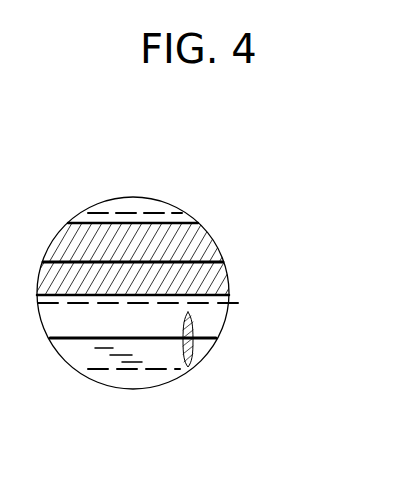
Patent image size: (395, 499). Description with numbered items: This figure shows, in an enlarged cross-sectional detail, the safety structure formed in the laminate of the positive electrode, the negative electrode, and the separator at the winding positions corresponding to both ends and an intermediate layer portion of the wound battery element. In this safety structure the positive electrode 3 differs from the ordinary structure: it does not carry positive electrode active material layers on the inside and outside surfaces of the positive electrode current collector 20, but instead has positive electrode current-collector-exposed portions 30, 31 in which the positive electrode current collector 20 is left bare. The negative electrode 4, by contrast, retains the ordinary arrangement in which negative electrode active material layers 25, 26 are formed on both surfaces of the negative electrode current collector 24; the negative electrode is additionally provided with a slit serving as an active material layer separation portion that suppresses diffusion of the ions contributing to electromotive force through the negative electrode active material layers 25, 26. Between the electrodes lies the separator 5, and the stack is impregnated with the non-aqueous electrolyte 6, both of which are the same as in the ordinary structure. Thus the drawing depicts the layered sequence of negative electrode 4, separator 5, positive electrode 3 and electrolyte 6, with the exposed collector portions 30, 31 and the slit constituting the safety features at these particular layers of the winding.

The positive electrode 3 is at (204, 373).
The negative electrode 4 is at (189, 240).
The separator 5 is at (140, 208).
The non-aqueous electrolyte 6 is at (132, 355).
The positive electrode current collector 20 is at (198, 320).
The negative electrode current collector 24 is at (222, 263).
The negative electrode active material layer 25 is at (169, 259).
The negative electrode active material layer 26 is at (200, 247).
The positive electrode current-collector-exposed portion 30 is at (190, 362).
The positive electrode current-collector-exposed portion 31 is at (188, 312).